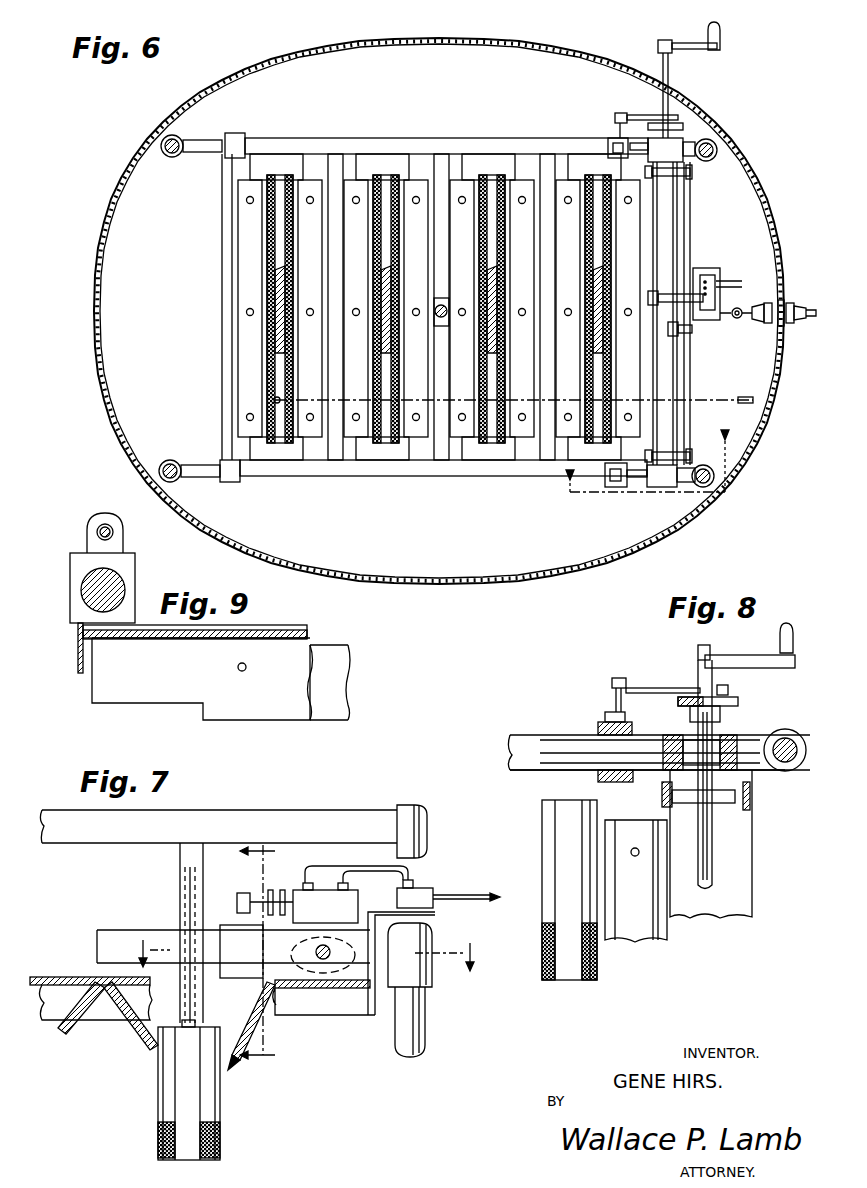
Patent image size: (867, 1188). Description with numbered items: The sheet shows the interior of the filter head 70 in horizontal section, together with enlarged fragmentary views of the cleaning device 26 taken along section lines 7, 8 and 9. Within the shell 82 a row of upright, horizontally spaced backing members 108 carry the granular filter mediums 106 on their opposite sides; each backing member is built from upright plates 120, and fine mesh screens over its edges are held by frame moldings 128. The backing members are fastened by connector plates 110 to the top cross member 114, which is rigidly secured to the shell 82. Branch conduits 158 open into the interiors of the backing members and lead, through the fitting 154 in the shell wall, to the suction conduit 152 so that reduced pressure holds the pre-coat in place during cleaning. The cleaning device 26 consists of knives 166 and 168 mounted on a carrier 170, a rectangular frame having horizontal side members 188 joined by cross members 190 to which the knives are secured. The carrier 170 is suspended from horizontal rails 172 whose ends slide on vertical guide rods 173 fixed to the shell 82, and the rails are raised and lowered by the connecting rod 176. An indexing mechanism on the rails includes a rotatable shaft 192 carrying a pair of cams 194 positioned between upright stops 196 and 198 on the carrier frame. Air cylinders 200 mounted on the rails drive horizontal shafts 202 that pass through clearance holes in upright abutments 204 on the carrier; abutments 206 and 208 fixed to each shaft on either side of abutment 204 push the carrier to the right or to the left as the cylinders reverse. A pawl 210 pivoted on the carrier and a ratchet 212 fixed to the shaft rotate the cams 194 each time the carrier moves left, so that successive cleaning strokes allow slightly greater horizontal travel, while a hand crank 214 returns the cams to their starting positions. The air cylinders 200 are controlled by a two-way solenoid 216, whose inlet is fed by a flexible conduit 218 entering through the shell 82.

In FIG. 6, the cleaning device 26 is at (236, 291).
In FIG. 7, the cleaning device 26 is at (335, 1025).
In FIG. 8, the cleaning device 26 is at (685, 945).
In FIG. 6, the head 70 is at (264, 58).
In FIG. 6, the shell 82 is at (354, 42).
In FIG. 7, the filter mediums 106 is at (158, 1134).
In FIG. 8, the filter mediums 106 is at (585, 975).
In FIG. 8, the backing members 108 is at (560, 843).
In FIG. 6, the connector plates 110 is at (280, 268).
In FIG. 7, the connector plates 110 is at (184, 893).
In FIG. 6, the top cross member 114 is at (428, 139).
In FIG. 9, the top cross member 114 is at (120, 580).
In FIG. 7, the top cross member 114 is at (348, 808).
In FIG. 8, the top cross member 114 is at (566, 735).
In FIG. 7, the upright plates 120 is at (195, 1120).
In FIG. 7, the frame moldings 128 is at (158, 1098).
In FIG. 6, the conduit 152 is at (808, 326).
In FIG. 6, the fitting 154 is at (774, 305).
In FIG. 7, the branch conduits 158 is at (189, 868).
In FIG. 7, the knives 166 is at (152, 1050).
In FIG. 9, the knives 168 is at (332, 680).
In FIG. 7, the knives 168 is at (238, 1062).
In FIG. 8, the knives 168 is at (636, 940).
In FIG. 9, the carrier 170 is at (76, 635).
In FIG. 7, the carrier 170 is at (45, 1022).
In FIG. 8, the carrier 170 is at (510, 735).
In FIG. 6, the rails 172 is at (248, 141).
In FIG. 7, the rails 172 is at (97, 930).
In FIG. 6, the guide rods 173 is at (180, 140).
In FIG. 7, the guide rods 173 is at (420, 1036).
In FIG. 8, the guide rods 173 is at (778, 770).
In FIG. 6, the connecting rod 176 is at (444, 318).
In FIG. 9, the side members 188 is at (78, 664).
In FIG. 7, the side members 188 is at (52, 977).
In FIG. 8, the side members 188 is at (524, 755).
In FIG. 6, the cross members 190 is at (224, 392).
In FIG. 9, the cross members 190 is at (130, 703).
In FIG. 7, the cross members 190 is at (80, 1020).
In FIG. 8, the cross members 190 is at (752, 862).
In FIG. 6, the shaft 192 is at (677, 385).
In FIG. 7, the shaft 192 is at (325, 903).
In FIG. 8, the shaft 192 is at (706, 880).
In FIG. 6, the cams 194 is at (680, 182).
In FIG. 7, the cams 194 is at (318, 940).
In FIG. 8, the cams 194 is at (718, 812).
In FIG. 6, the stops 196 is at (644, 170).
In FIG. 7, the stops 196 is at (293, 963).
In FIG. 8, the stops 196 is at (662, 795).
In FIG. 6, the stops 198 is at (692, 172).
In FIG. 7, the stops 198 is at (382, 968).
In FIG. 8, the stops 198 is at (752, 800).
In FIG. 6, the air cylinders 200 is at (683, 140).
In FIG. 7, the air cylinders 200 is at (336, 882).
In FIG. 7, the horizontal shaft 202 is at (236, 912).
In FIG. 7, the abutments 204 is at (241, 951).
In FIG. 7, the abutments 206 is at (252, 890).
In FIG. 7, the abutments 208 is at (280, 890).
In FIG. 6, the pawl 210 is at (649, 125).
In FIG. 8, the pawl 210 is at (728, 690).
In FIG. 8, the ratchet 212 is at (728, 705).
In FIG. 6, the hand crank 214 is at (715, 50).
In FIG. 8, the hand crank 214 is at (760, 657).
In FIG. 6, the solenoid 216 is at (718, 321).
In FIG. 7, the solenoid 216 is at (432, 890).
In FIG. 6, the conduit 218 is at (748, 296).
In FIG. 7, the conduit 218 is at (457, 901).
In FIG. 6, the section line 7- 7 is at (651, 461).
In FIG. 7, the section line 8- 8 is at (304, 954).
In FIG. 7, the section line 9- 9 is at (266, 950).